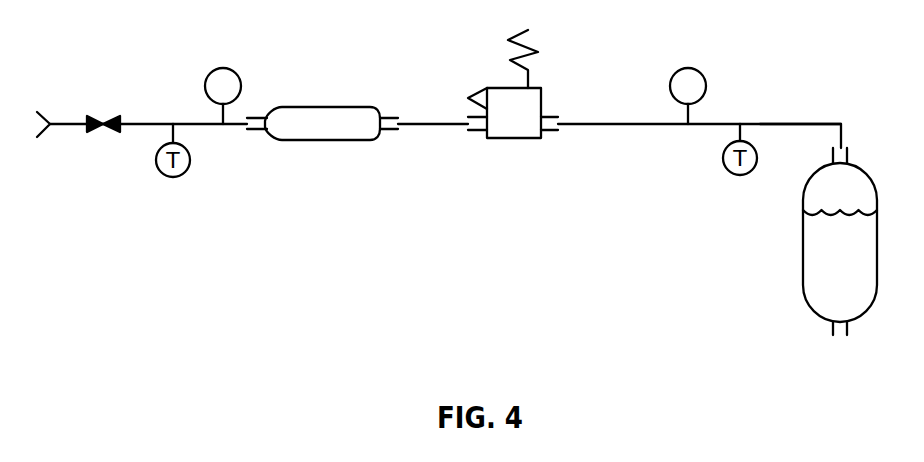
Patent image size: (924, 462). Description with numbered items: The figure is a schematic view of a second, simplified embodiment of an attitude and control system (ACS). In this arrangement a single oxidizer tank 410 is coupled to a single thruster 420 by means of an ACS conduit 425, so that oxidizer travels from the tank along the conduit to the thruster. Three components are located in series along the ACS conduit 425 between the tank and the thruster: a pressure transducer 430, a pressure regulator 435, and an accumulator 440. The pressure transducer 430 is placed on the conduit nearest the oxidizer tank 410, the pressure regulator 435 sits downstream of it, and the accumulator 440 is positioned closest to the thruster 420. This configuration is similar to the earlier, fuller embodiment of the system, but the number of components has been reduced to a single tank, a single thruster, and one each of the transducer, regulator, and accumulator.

The oxidizer tank 410 is at (865, 258).
The thruster 420 is at (103, 127).
The ACS conduit 425 is at (793, 123).
The pressure transducer 430 is at (706, 80).
The pressure regulator 435 is at (541, 98).
The accumulator 440 is at (320, 107).